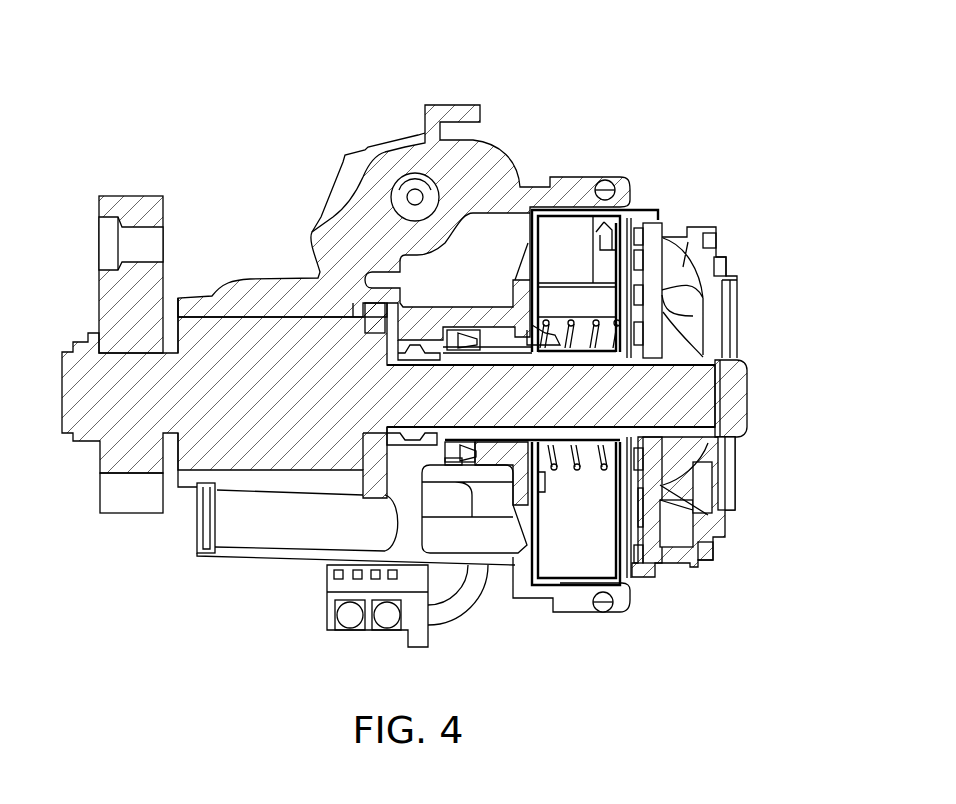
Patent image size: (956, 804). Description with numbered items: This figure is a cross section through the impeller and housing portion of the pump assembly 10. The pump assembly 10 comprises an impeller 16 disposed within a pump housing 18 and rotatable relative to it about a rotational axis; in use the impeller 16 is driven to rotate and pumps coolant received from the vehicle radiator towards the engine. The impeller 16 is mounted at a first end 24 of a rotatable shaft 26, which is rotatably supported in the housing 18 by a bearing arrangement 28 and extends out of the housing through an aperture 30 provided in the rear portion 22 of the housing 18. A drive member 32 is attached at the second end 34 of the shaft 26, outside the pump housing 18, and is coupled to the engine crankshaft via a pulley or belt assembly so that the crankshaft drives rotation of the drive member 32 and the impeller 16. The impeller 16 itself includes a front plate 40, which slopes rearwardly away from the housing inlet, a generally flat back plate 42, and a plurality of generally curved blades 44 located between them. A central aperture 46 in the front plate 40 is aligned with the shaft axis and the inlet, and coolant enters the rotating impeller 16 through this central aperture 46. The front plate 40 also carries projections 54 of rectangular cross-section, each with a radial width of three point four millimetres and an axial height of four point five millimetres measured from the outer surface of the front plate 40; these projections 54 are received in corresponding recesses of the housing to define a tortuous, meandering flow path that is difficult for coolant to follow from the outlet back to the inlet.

The pump assembly 10 is at (507, 80).
The impeller 16 is at (703, 216).
The pump housing 18 is at (293, 582).
The rear portion 22 is at (290, 272).
The first end 24 is at (680, 392).
The rotatable shaft 26 is at (490, 412).
The bearing arrangement 28 is at (197, 457).
The aperture 30 is at (170, 350).
The drive member 32 is at (122, 186).
The second end 34 is at (108, 423).
The front plate 40 is at (712, 220).
The back plate 42 is at (652, 230).
The blades 44 is at (717, 237).
The central aperture 46 is at (730, 340).
The projections 54 is at (727, 237).